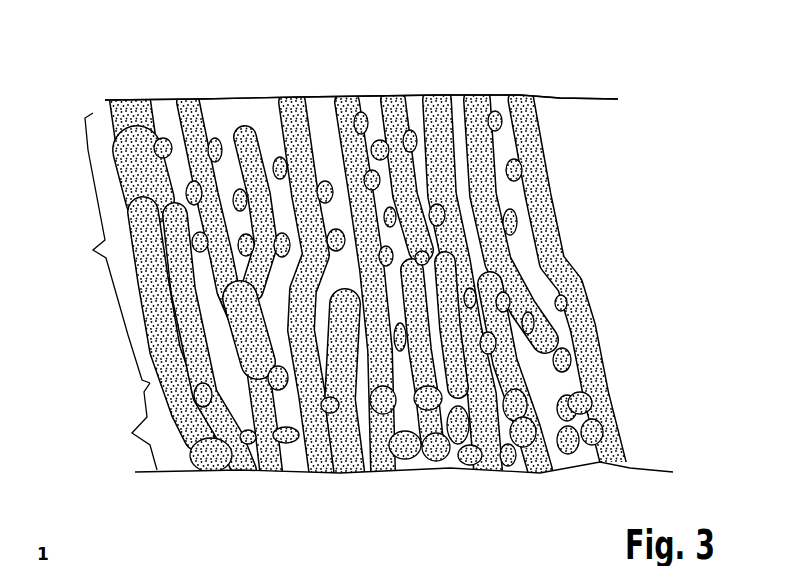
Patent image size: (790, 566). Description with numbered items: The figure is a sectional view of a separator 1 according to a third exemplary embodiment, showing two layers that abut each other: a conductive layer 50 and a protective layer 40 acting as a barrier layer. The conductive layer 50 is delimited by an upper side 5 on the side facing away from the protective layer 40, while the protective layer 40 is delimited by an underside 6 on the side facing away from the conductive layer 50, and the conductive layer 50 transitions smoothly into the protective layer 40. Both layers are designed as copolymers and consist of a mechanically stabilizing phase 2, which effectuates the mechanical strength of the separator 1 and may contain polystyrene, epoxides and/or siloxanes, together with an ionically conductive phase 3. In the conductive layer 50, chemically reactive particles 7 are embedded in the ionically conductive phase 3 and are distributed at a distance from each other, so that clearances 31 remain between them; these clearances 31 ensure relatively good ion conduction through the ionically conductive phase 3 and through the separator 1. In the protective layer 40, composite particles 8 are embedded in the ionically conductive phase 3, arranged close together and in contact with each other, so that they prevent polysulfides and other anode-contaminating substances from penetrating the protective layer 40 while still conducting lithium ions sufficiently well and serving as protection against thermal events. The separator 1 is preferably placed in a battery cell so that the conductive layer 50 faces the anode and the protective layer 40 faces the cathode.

The separator 1 is at (107, 78).
The mechanically stabilizing phase 2 is at (139, 112).
The ionically conductive phase 3 is at (263, 128).
The upper side 5 is at (370, 99).
The underside 6 is at (367, 470).
The chemically reactive particles 7 is at (567, 357).
The composite particles 8 is at (418, 464).
The clearances 31 is at (578, 388).
The protective layer 40 is at (130, 426).
The conductive layer 50 is at (106, 248).